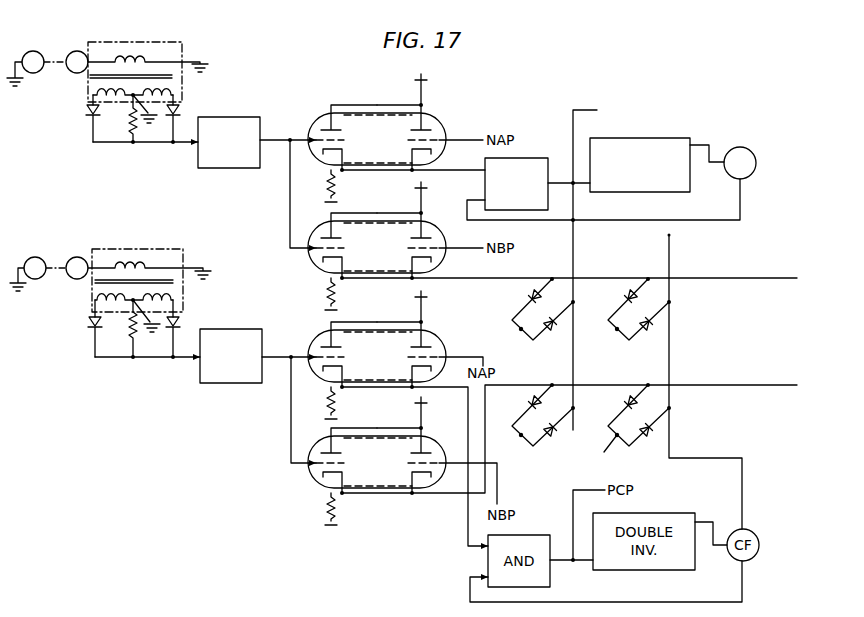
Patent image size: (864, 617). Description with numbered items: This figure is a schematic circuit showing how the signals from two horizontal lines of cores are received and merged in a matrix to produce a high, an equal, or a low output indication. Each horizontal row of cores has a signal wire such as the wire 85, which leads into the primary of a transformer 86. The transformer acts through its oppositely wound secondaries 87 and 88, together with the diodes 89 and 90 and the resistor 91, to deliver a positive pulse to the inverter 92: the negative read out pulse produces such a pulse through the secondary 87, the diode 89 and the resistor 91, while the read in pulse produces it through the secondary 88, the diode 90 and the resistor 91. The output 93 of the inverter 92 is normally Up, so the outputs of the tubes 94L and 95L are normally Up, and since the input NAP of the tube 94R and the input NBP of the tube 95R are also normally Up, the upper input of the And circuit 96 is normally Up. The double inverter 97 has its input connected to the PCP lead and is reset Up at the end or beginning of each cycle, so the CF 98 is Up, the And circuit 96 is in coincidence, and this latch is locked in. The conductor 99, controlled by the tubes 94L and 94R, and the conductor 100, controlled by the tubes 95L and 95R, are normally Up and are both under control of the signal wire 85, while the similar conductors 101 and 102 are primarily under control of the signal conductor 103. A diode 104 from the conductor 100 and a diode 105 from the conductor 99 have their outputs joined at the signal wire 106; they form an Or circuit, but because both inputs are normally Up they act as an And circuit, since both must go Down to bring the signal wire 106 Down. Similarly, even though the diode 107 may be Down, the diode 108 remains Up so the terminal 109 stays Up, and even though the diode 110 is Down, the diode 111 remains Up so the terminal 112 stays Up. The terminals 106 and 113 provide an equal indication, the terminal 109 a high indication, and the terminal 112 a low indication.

The signal wire 85 is at (15, 60).
The transformer 86 is at (135, 57).
The secondary 87 is at (114, 101).
The secondary 88 is at (158, 101).
The diode 89 is at (84, 114).
The diode 90 is at (184, 113).
The resistor 91 is at (145, 130).
The inverter 92 is at (243, 117).
The output of the inverter 93 is at (273, 140).
The tube 94L is at (317, 122).
The tube 94R is at (433, 120).
The tube 95L is at (315, 235).
The tube 95R is at (428, 233).
The And circuit 96 is at (531, 160).
The double inverter 97 is at (660, 140).
The CF 98 is at (740, 148).
The conductor 99 is at (574, 266).
The conductor 100 is at (522, 279).
The conductor 101 is at (670, 261).
The conductor 102 is at (590, 386).
The signal conductor 103 is at (18, 266).
The diode 104 is at (524, 299).
The diode 105 is at (552, 330).
The signal wire 106 is at (520, 334).
The diode 107 is at (552, 443).
The diode 108 is at (525, 409).
The terminal 109 is at (520, 440).
The diode 110 is at (647, 333).
The diode 111 is at (620, 303).
The terminal 112 is at (617, 333).
The terminal 113 is at (618, 441).